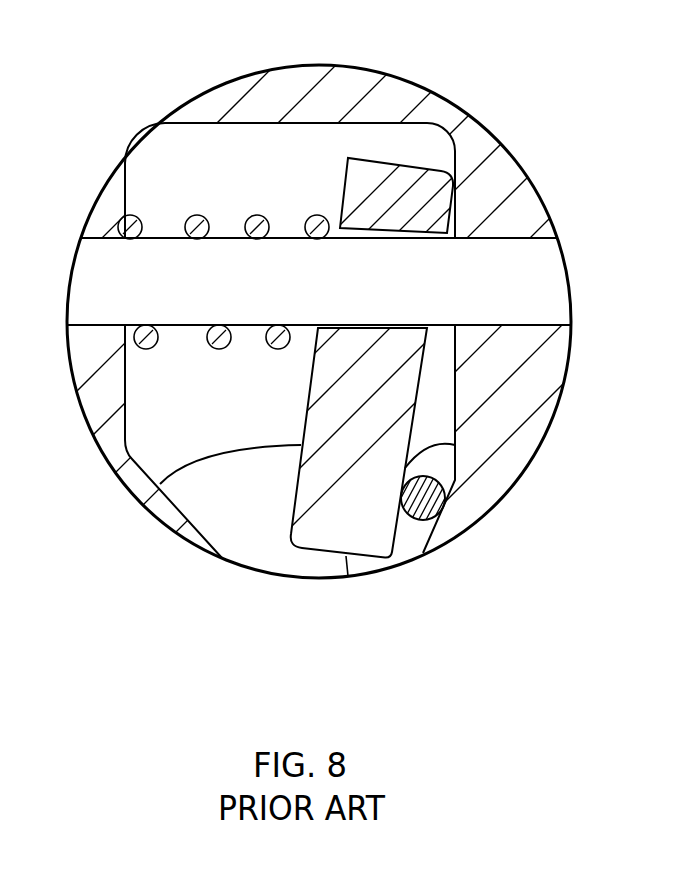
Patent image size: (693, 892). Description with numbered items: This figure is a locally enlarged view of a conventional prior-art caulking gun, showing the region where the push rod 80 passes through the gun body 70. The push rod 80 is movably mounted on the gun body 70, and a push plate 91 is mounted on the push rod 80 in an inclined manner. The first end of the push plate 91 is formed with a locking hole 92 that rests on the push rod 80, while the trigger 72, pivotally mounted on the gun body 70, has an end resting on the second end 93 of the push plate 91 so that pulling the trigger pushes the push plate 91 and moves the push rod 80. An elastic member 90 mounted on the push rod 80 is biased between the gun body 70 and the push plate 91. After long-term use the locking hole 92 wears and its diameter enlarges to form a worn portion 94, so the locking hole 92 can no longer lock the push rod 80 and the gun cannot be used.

The gun body 70 is at (549, 374).
The trigger 72 is at (400, 547).
The push rod 80 is at (541, 279).
The elastic member 90 is at (197, 213).
The push plate 91 is at (282, 500).
The locking hole 92 is at (410, 173).
The second end of the push plate 93 is at (141, 503).
The worn portion 94 is at (457, 195).